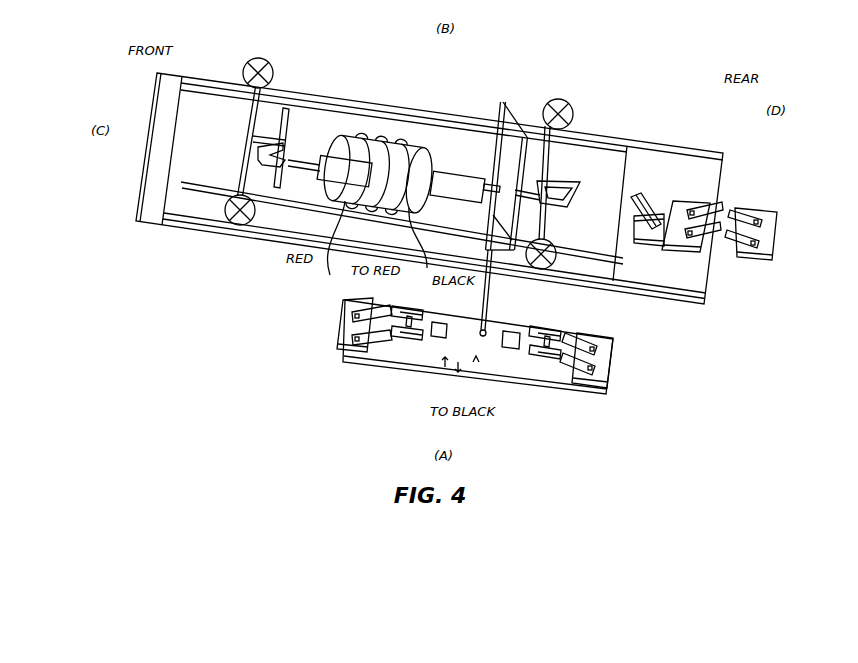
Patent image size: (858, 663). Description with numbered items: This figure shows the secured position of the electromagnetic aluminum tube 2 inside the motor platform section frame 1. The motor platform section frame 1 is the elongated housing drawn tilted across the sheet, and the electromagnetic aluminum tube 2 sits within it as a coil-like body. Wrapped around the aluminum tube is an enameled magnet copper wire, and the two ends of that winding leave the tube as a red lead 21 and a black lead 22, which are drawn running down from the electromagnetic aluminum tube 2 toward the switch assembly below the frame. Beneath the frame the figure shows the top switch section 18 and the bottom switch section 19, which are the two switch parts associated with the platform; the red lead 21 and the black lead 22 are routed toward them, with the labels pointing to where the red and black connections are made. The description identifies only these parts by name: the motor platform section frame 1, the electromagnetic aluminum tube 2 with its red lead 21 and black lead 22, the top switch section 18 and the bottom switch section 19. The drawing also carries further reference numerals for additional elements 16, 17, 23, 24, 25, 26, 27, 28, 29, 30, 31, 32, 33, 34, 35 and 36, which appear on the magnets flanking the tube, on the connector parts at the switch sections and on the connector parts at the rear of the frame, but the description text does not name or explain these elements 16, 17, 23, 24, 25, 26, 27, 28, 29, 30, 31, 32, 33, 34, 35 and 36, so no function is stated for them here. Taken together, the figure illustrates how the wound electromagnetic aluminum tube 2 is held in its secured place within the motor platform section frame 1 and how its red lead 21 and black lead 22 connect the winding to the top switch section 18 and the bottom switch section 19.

The motor platform section frame 1 is at (507, 98).
The electromagnetic aluminum tube 2 is at (378, 136).
The rear magnet 16 is at (462, 174).
The front magnet 17 is at (333, 157).
The top switch section 18 is at (552, 324).
The bottom switch section 19 is at (559, 394).
The red lead 21 is at (328, 277).
The black lead 22 is at (425, 268).
The connector housing 23 is at (342, 283).
The red terminal 24 is at (417, 312).
The lower terminal 25 is at (432, 394).
The black terminal 26 is at (510, 400).
The upper contact 27 is at (340, 318).
The lower contact 28 is at (340, 334).
The rear connector upper contact 29 is at (613, 352).
The rear connector lower contact 30 is at (597, 374).
The upper contact 31 is at (690, 212).
The rear coupling connector 32 is at (680, 210).
The latch 33 is at (688, 240).
The lower contact 34 is at (722, 252).
The mating connector 35 is at (757, 260).
The mating contacts 36 is at (770, 212).